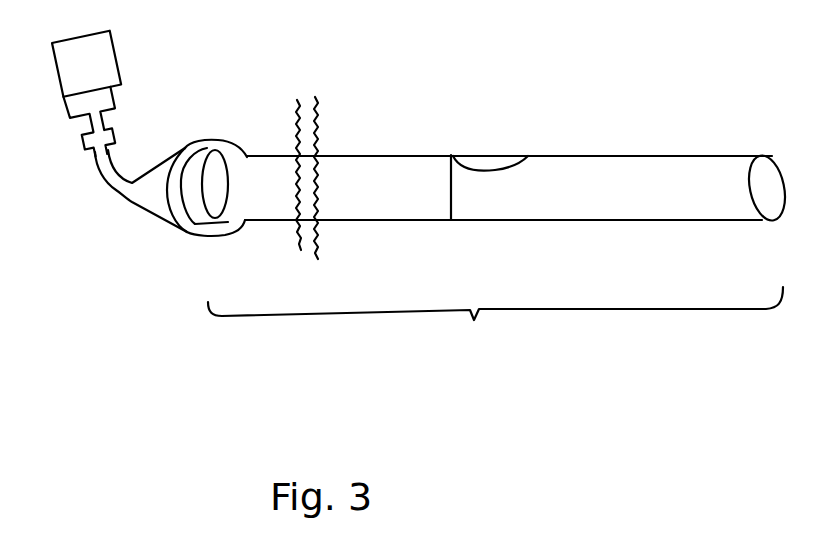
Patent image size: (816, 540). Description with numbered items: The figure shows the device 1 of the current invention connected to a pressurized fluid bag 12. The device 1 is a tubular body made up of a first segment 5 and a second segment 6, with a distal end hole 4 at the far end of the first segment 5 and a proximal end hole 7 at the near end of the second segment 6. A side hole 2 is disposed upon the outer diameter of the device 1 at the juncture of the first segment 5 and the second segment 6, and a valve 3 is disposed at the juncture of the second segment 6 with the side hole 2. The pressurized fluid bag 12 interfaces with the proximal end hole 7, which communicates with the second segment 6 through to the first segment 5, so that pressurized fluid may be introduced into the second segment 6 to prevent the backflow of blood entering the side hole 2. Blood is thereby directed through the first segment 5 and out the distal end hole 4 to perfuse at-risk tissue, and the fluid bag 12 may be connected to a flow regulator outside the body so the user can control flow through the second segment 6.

The device 1 is at (495, 327).
The side hole 2 is at (487, 160).
The valve 3 is at (447, 195).
The distal end hole 4 is at (770, 182).
The first segment 5 is at (623, 153).
The second segment 6 is at (377, 153).
The proximal end hole 7 is at (217, 157).
The pressurized fluid bag 12 is at (65, 82).